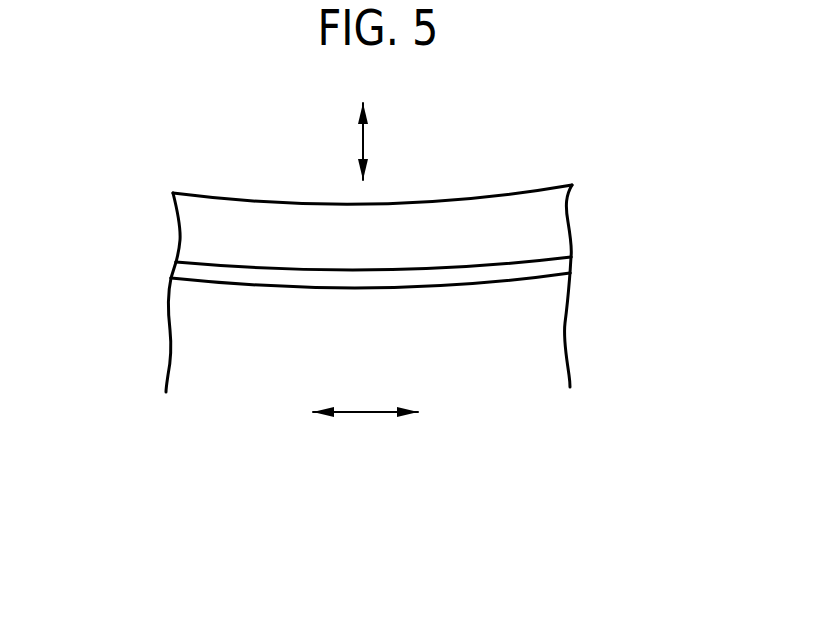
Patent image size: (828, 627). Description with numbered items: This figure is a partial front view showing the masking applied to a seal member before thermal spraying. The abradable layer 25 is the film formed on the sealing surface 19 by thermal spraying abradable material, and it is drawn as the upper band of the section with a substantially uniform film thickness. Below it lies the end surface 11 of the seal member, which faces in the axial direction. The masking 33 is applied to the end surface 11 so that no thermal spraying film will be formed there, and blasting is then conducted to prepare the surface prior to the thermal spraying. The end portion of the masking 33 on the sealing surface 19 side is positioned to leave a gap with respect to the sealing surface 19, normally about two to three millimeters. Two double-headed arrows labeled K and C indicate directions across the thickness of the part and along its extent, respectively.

The abradable layer 25 is at (547, 222).
The end surface 11 is at (552, 267).
The sealing surface 19 is at (208, 263).
The masking 33 is at (543, 323).
The thickness direction K is at (364, 138).
The circumferential direction C is at (363, 413).